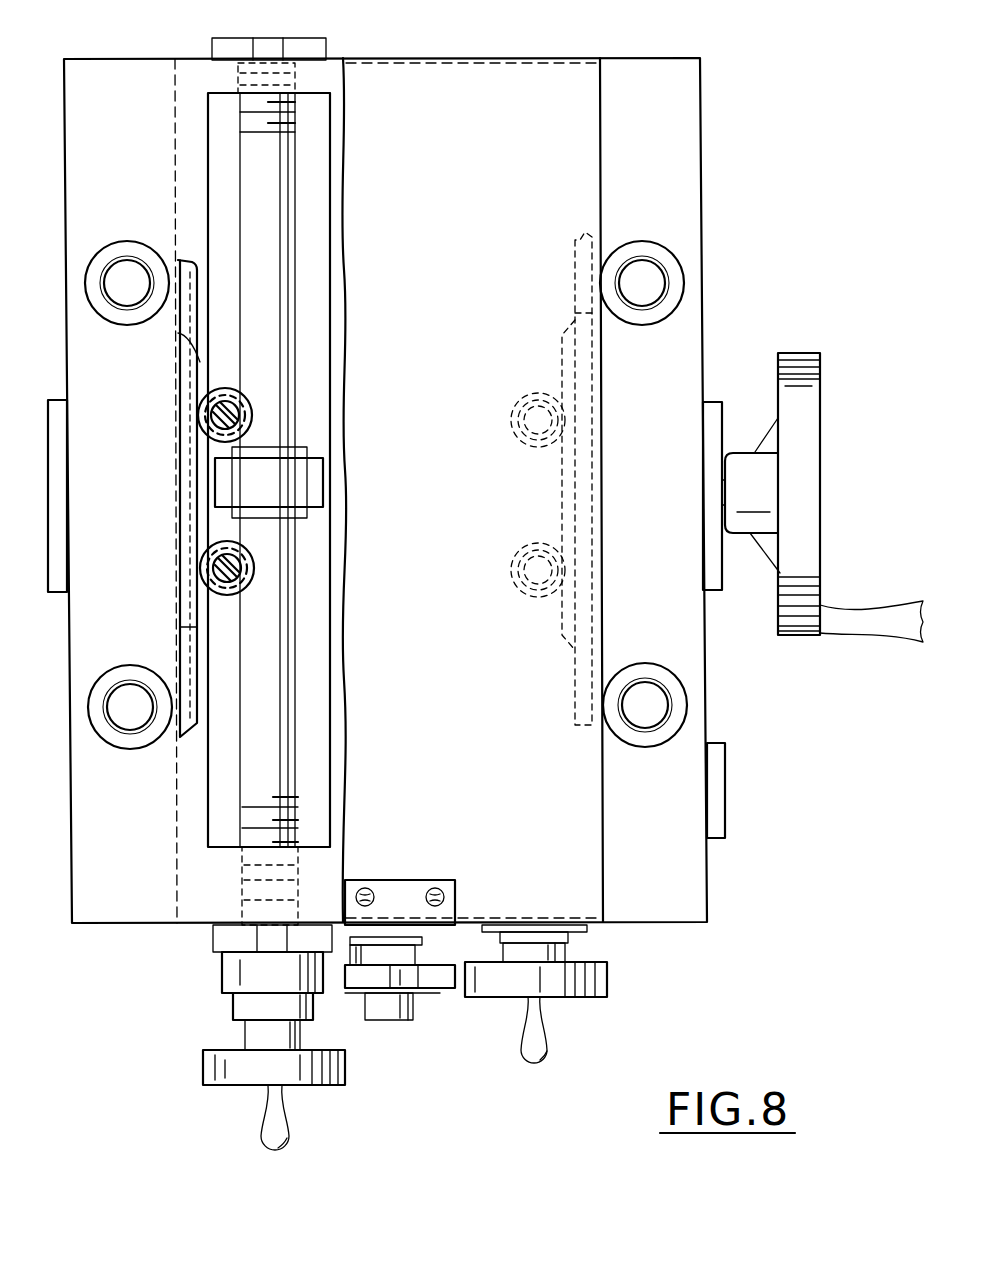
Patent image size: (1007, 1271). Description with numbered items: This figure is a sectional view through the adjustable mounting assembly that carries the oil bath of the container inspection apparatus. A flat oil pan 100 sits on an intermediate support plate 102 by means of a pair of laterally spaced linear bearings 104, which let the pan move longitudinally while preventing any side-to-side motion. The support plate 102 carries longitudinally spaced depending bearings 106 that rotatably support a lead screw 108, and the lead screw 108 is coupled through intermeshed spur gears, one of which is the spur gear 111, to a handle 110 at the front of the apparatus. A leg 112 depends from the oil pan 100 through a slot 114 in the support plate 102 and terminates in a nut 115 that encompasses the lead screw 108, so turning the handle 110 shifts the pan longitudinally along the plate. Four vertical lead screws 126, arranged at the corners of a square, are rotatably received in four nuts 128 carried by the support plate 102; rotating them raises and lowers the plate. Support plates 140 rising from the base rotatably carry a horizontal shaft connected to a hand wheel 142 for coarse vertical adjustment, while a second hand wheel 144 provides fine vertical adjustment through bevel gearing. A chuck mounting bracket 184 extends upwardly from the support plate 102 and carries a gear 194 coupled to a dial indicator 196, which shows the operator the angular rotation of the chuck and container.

The oil pan 100 is at (482, 70).
The intermediate support plate 102 is at (698, 892).
The linear bearings 104 is at (200, 560).
The depending bearings 106 is at (223, 938).
The lead screw 108 is at (290, 660).
The handle 110 is at (215, 1068).
The spur gear 111 is at (240, 980).
The leg 112 is at (323, 470).
The slot 114 is at (326, 256).
The nut 115 is at (306, 512).
The lead screws 126 is at (124, 272).
The nuts 128 is at (133, 315).
The support plates 140 is at (60, 562).
The hand wheel 142 is at (815, 408).
The second hand wheel 144 is at (583, 983).
The chuck mounting bracket 184 is at (440, 983).
The gear 194 is at (420, 937).
The dial indicator 196 is at (395, 1012).